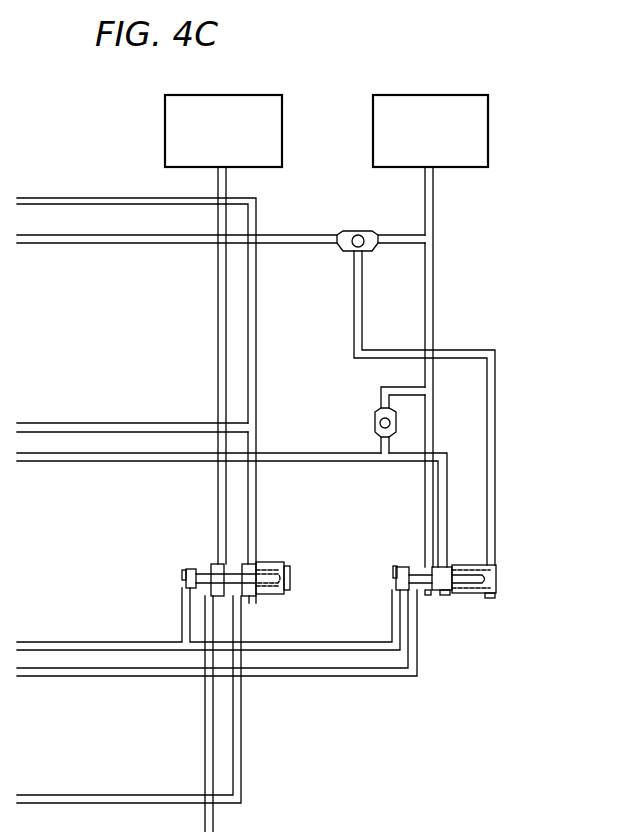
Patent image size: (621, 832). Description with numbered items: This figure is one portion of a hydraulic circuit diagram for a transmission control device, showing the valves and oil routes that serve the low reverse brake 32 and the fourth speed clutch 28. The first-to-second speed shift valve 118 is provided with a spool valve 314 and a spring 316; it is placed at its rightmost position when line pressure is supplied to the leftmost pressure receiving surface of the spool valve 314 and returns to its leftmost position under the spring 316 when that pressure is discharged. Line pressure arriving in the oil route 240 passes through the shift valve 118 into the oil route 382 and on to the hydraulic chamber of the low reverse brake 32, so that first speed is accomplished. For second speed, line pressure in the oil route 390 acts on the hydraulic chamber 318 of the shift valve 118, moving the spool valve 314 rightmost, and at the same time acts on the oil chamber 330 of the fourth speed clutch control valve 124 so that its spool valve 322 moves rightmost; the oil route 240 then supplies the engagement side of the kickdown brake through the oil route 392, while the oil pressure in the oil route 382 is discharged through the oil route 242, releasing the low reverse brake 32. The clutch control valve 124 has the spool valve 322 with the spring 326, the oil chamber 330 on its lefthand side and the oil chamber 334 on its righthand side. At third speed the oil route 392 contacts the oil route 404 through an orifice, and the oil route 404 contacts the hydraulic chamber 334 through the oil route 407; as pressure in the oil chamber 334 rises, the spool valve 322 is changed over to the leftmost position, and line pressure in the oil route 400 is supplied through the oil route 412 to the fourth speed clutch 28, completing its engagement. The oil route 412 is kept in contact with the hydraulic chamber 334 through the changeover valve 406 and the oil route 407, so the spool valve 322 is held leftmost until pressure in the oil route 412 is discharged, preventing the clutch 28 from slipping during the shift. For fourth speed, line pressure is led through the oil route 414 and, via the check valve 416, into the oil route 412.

The low reverse brake 32 is at (281, 106).
The 4 speed clutch 28 is at (488, 108).
The oil route 382 is at (218, 355).
The oil route 392 is at (257, 314).
The oil route 404 is at (92, 243).
The changeover valve 406 is at (352, 231).
The oil route 412 is at (434, 293).
The oil route 407 is at (496, 405).
The check valve 416 is at (375, 420).
The oil route 414 is at (80, 461).
The 1-2 speed shift valve 118 is at (242, 599).
The hydraulic chamber 318 is at (182, 568).
The spring 316 is at (291, 577).
The spool valve 314 is at (253, 604).
The 4 speed clutch control valve 124 is at (450, 602).
The oil chamber 330 is at (395, 566).
The spool valve 322 is at (428, 595).
The spring 326 is at (494, 564).
The oil chamber 334 is at (484, 599).
The oil route 390 is at (88, 642).
The oil route 400 is at (128, 676).
The oil route 242 is at (214, 748).
The oil route 240 is at (243, 790).